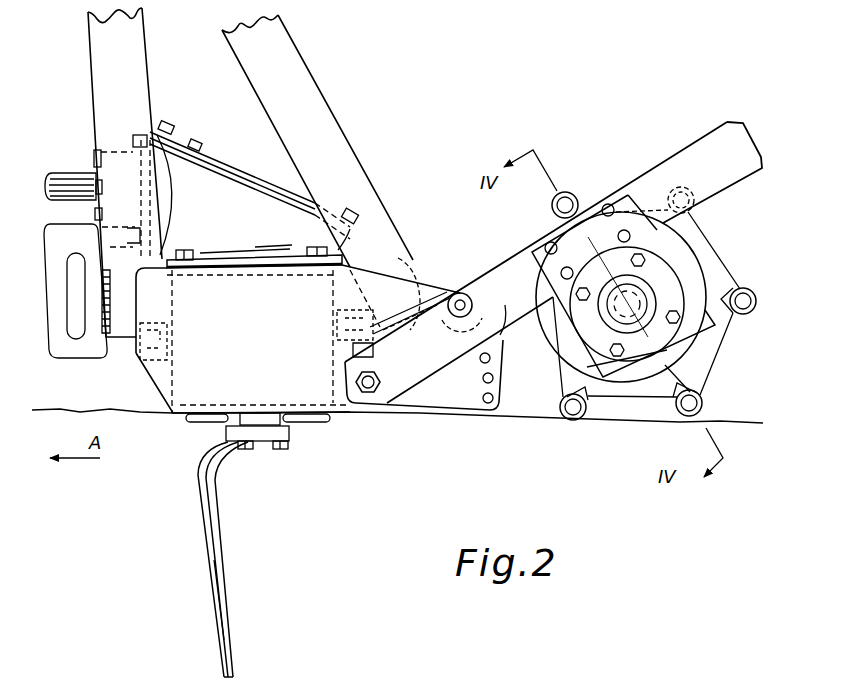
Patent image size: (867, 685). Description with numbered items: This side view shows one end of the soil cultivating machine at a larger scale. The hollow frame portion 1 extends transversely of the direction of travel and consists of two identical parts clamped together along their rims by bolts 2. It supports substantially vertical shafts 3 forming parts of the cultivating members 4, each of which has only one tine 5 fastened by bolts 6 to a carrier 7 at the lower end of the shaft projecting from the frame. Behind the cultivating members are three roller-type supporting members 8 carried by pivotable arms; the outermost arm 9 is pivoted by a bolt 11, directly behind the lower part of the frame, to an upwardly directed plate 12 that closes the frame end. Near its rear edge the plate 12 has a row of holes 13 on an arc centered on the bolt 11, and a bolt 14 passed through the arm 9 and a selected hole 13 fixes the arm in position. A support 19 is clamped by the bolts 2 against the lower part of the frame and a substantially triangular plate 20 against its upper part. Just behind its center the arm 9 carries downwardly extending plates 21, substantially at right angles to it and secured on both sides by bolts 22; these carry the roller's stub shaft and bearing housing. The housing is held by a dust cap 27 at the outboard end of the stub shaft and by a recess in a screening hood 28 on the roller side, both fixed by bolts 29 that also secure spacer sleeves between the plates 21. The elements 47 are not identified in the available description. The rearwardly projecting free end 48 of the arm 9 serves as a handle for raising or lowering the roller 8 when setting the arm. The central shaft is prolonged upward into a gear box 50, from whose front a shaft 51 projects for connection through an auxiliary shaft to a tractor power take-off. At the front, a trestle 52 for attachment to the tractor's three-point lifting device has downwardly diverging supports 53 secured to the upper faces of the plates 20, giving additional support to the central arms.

The hollow frame portion 1 is at (164, 367).
The bolts 2 is at (158, 312).
The shafts 3 is at (248, 412).
The cultivating members 4 is at (233, 595).
The tine 5 is at (205, 548).
The bolts 6 is at (248, 449).
The carrier 7 is at (226, 432).
The supporting members 8 is at (728, 247).
The arms 9 is at (503, 258).
The bolts 11 is at (356, 382).
The plates 12 is at (383, 285).
The holes 13 is at (481, 361).
The bolt 14 is at (465, 293).
The support 19 is at (437, 328).
The plate 20 is at (425, 283).
The plates 21 is at (627, 194).
The bolts 22 is at (569, 266).
The dust cap 27 is at (588, 330).
The screening hood 28 is at (646, 372).
The bolts 29 is at (680, 320).
The bolts 47 is at (552, 213).
The free ends 48 is at (717, 130).
The gear box 50 is at (203, 146).
The shaft 51 is at (55, 175).
The trestle 52 is at (133, 33).
The supports 53 is at (330, 133).